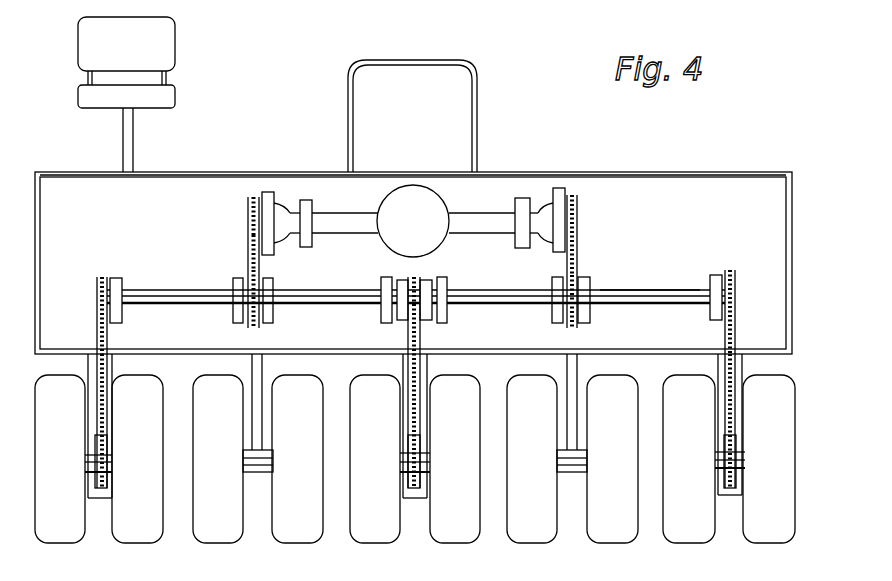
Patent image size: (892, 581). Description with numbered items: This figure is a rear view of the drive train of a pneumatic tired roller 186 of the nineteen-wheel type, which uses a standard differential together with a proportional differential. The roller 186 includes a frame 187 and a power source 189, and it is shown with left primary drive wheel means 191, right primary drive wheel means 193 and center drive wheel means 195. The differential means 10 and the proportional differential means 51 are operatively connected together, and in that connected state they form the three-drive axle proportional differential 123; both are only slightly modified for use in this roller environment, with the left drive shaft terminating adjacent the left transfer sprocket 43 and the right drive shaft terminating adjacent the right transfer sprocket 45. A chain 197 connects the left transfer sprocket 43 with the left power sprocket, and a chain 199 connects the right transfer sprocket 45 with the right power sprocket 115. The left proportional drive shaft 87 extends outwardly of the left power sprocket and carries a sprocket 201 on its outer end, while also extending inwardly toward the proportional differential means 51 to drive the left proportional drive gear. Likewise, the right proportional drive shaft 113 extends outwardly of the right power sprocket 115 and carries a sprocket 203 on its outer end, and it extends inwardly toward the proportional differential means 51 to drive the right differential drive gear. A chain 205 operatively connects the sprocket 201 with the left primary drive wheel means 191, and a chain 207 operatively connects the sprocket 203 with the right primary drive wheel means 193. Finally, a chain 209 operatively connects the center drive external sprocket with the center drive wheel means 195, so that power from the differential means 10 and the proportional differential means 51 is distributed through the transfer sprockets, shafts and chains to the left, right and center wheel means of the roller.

The differential means 10 is at (380, 188).
The left transfer sprocket 43 is at (247, 203).
The right transfer sprocket 45 is at (580, 205).
The proportional differential means 51 is at (376, 276).
The left proportional drive shaft 87 is at (181, 296).
The right proportional drive shaft 113 is at (672, 273).
The right power sprocket 115 is at (572, 323).
The three-drive axle proportional differential 123 is at (242, 250).
The pneumatic tired roller 186 is at (502, 160).
The frame 187 is at (666, 181).
The power source 189 is at (477, 90).
The left primary drive wheel means 191 is at (107, 540).
The right primary drive wheel means 193 is at (727, 534).
The center drive wheel means 195 is at (418, 534).
The chain 197 is at (263, 267).
The chain 199 is at (578, 259).
The sprocket 201 is at (97, 278).
The sprocket 203 is at (735, 276).
The chain 205 is at (97, 342).
The chain 207 is at (735, 340).
The chain 209 is at (421, 335).